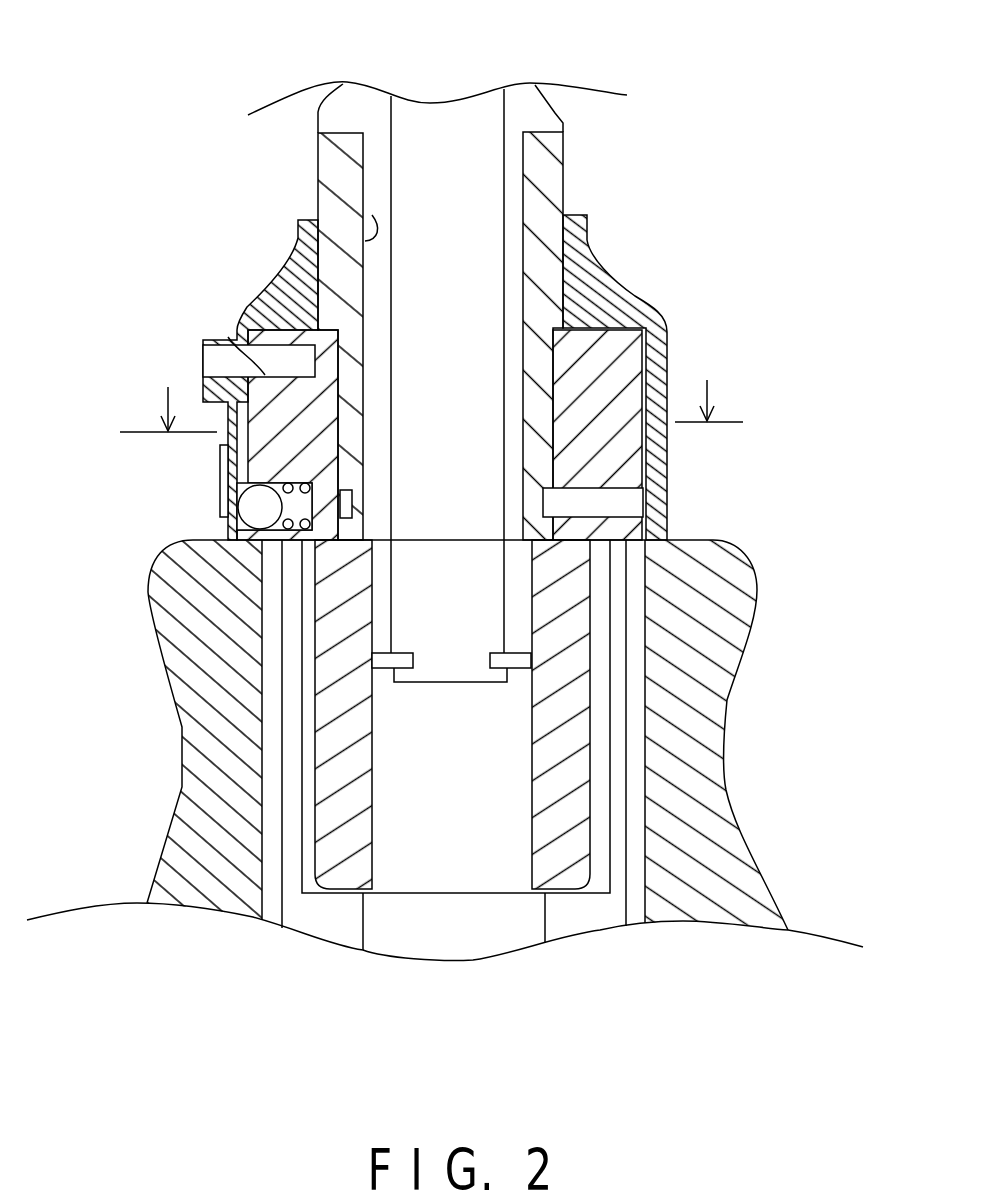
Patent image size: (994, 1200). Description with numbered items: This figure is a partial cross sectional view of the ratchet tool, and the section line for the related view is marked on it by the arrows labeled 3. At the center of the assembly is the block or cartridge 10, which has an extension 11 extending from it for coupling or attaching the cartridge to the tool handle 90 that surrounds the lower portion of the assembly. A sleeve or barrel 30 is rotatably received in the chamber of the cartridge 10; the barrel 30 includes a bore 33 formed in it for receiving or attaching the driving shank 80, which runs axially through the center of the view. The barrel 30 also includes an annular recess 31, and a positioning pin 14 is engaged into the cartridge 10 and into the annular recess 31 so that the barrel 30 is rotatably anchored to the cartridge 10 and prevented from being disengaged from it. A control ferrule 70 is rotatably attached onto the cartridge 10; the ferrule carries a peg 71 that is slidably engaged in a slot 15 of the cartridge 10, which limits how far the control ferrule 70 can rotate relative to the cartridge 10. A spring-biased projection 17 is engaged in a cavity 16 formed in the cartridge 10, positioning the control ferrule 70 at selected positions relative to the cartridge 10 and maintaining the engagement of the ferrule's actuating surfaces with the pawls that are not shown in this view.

The driving shank 80 is at (432, 122).
The barrel 30 is at (558, 185).
The bore 33 is at (372, 215).
The slot 15 is at (228, 337).
The control ferrule 70 is at (637, 295).
The peg 71 is at (215, 358).
The cartridge 10 is at (632, 358).
The positioning pin 14 is at (632, 505).
The spring-biased projection 17 is at (222, 522).
The cavity 16 is at (248, 518).
The annular recess 31 is at (347, 512).
The extension 11 is at (326, 774).
The tool handle 90 is at (723, 855).
The section line 3- 3 is at (434, 406).